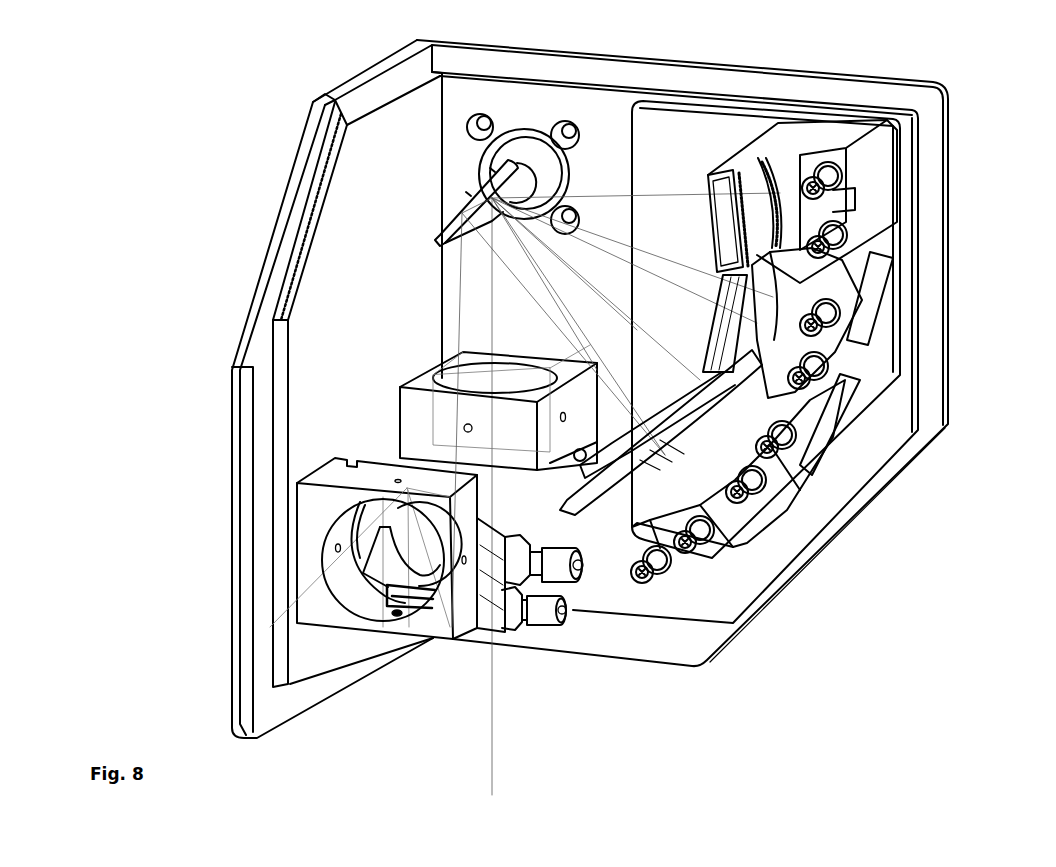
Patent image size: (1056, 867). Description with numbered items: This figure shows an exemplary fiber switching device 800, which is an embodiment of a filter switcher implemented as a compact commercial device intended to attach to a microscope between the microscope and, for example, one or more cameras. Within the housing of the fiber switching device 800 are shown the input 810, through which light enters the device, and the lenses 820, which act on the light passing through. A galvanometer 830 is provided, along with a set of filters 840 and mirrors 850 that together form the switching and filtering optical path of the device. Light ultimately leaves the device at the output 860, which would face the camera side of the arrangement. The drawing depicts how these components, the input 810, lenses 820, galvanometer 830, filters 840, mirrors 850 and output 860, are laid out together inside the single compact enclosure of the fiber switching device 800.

The fiber switching device 800 is at (186, 85).
The input 810 is at (471, 496).
The lenses 820 is at (433, 492).
The galvanometer 830 is at (586, 370).
The filters 840 is at (728, 334).
The mirrors 850 is at (960, 158).
The output 860 is at (448, 522).